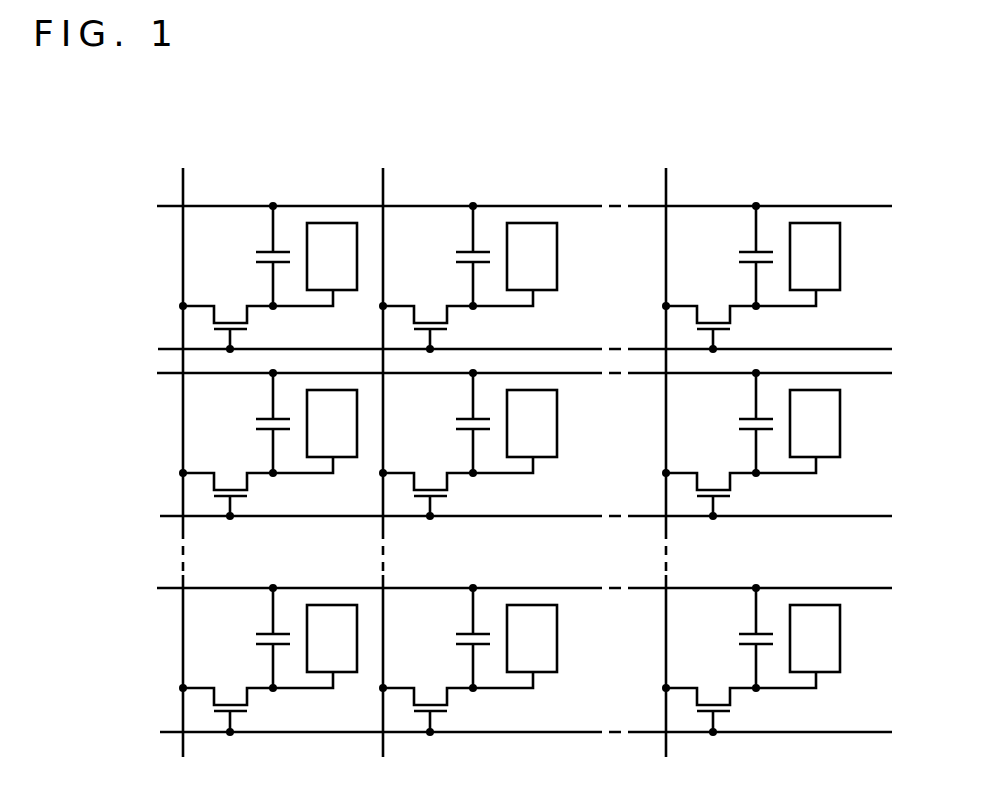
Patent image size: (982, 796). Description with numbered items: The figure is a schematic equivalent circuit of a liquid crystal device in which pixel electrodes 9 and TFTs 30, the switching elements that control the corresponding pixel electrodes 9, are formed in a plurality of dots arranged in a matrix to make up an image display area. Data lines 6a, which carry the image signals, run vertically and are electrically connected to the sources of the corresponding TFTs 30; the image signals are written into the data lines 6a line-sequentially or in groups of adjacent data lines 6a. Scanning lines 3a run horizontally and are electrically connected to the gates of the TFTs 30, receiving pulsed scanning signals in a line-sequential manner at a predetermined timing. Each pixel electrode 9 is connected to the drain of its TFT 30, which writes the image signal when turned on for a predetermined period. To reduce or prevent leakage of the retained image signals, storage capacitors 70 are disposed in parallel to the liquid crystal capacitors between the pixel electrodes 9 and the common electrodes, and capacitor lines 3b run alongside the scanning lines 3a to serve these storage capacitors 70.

The scanning line 3a is at (166, 349).
The capacitor line 3b is at (157, 206).
The data line 6a is at (183, 182).
The pixel electrode 9 is at (333, 228).
The storage capacitor 70 is at (257, 256).
The TFT 30 is at (257, 329).